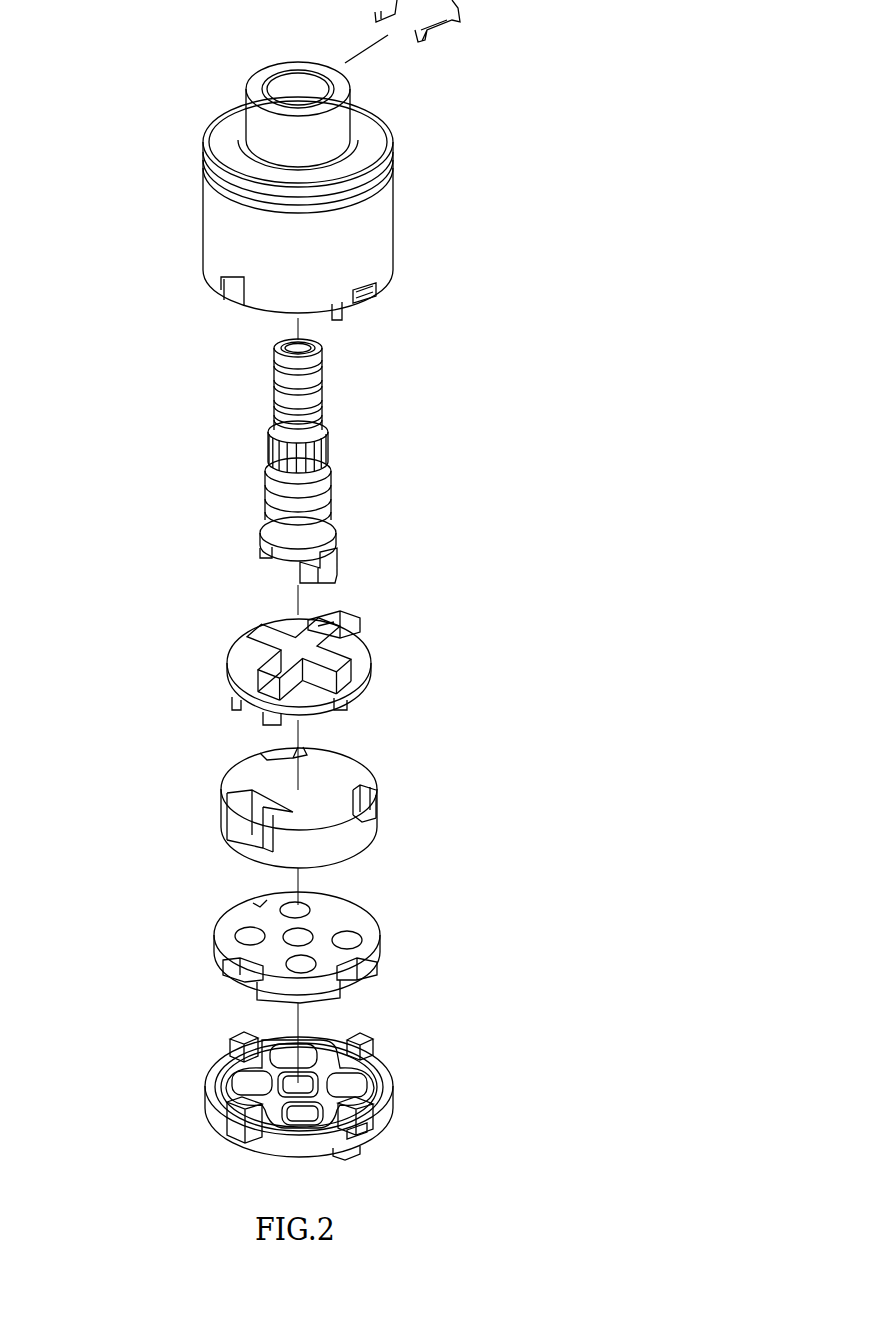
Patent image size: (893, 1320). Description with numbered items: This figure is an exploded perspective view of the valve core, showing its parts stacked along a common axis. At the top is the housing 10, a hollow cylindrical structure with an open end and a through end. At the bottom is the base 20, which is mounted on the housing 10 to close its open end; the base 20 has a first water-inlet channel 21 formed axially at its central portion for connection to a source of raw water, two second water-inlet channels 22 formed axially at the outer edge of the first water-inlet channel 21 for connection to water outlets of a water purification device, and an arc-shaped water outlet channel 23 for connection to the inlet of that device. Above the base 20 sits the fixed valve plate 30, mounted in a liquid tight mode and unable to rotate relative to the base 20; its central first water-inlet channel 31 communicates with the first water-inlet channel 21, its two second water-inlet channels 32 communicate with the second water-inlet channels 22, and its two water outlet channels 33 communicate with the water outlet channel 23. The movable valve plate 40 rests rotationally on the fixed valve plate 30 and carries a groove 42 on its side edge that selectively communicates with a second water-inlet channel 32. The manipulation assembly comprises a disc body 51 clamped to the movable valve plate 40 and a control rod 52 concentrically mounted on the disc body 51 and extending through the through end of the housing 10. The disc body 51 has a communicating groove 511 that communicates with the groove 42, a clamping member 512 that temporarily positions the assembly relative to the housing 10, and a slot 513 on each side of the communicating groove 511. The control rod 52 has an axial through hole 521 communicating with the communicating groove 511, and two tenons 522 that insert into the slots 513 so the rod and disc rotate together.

The housing 10 is at (416, 204).
The base 20 is at (331, 1083).
The first water-inlet channel 21 is at (292, 1082).
The second water-inlet channel 22 is at (238, 1104).
The water outlet channel 23 is at (340, 1072).
The fixed valve plate 30 is at (336, 931).
The first water-inlet channel 31 is at (280, 922).
The second water-inlet channel 32 is at (243, 937).
The water outlet channel 33 is at (296, 912).
The movable valve plate 40 is at (301, 793).
The groove 42 is at (257, 825).
The disc body 51 is at (323, 658).
The communicating groove 511 is at (272, 687).
The clamping member 512 is at (350, 623).
The slot 513 is at (290, 640).
The control rod 52 is at (276, 461).
The through hole 521 is at (298, 352).
The tenon 522 is at (328, 565).